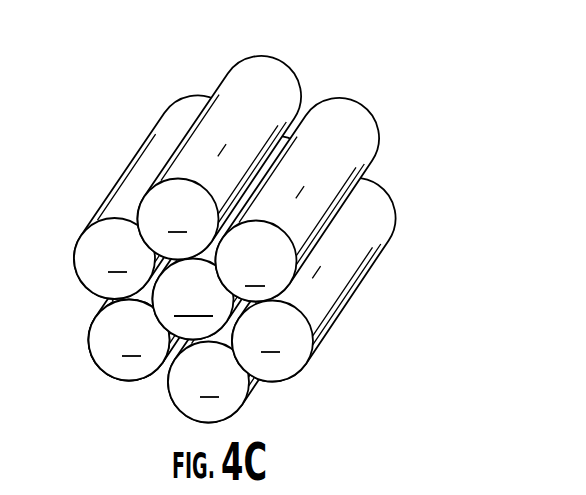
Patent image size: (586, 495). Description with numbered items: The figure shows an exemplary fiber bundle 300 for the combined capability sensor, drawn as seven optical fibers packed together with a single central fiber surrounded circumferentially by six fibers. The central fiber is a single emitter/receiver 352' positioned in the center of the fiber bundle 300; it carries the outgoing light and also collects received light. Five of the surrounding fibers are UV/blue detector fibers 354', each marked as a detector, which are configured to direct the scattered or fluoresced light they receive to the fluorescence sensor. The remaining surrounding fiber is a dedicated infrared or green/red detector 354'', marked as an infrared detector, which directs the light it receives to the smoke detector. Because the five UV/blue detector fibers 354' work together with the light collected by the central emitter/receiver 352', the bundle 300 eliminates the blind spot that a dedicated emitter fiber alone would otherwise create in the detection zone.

The fiber bundle 300 is at (263, 218).
The emitter/receiver fiber 352' is at (309, 239).
The UV/blue detector fibers 354' is at (260, 232).
The infrared or green/red detector fiber 354'' is at (297, 167).